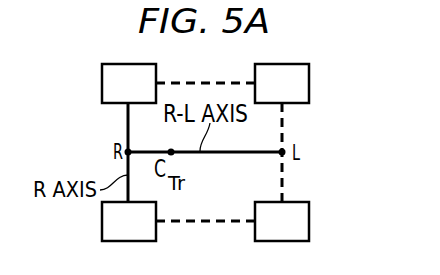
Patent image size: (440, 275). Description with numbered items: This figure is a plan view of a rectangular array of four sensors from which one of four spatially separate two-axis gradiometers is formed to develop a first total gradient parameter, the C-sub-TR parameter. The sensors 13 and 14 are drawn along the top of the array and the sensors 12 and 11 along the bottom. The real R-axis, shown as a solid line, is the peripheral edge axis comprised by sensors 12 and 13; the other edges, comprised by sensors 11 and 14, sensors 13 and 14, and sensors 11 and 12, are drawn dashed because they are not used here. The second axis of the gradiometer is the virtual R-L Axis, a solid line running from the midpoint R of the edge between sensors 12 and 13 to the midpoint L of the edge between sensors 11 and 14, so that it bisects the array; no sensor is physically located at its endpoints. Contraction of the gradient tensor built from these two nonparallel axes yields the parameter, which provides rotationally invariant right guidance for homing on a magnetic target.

The sensor 11 is at (309, 217).
The sensor 12 is at (102, 215).
The sensor 13 is at (102, 87).
The sensor 14 is at (309, 87).